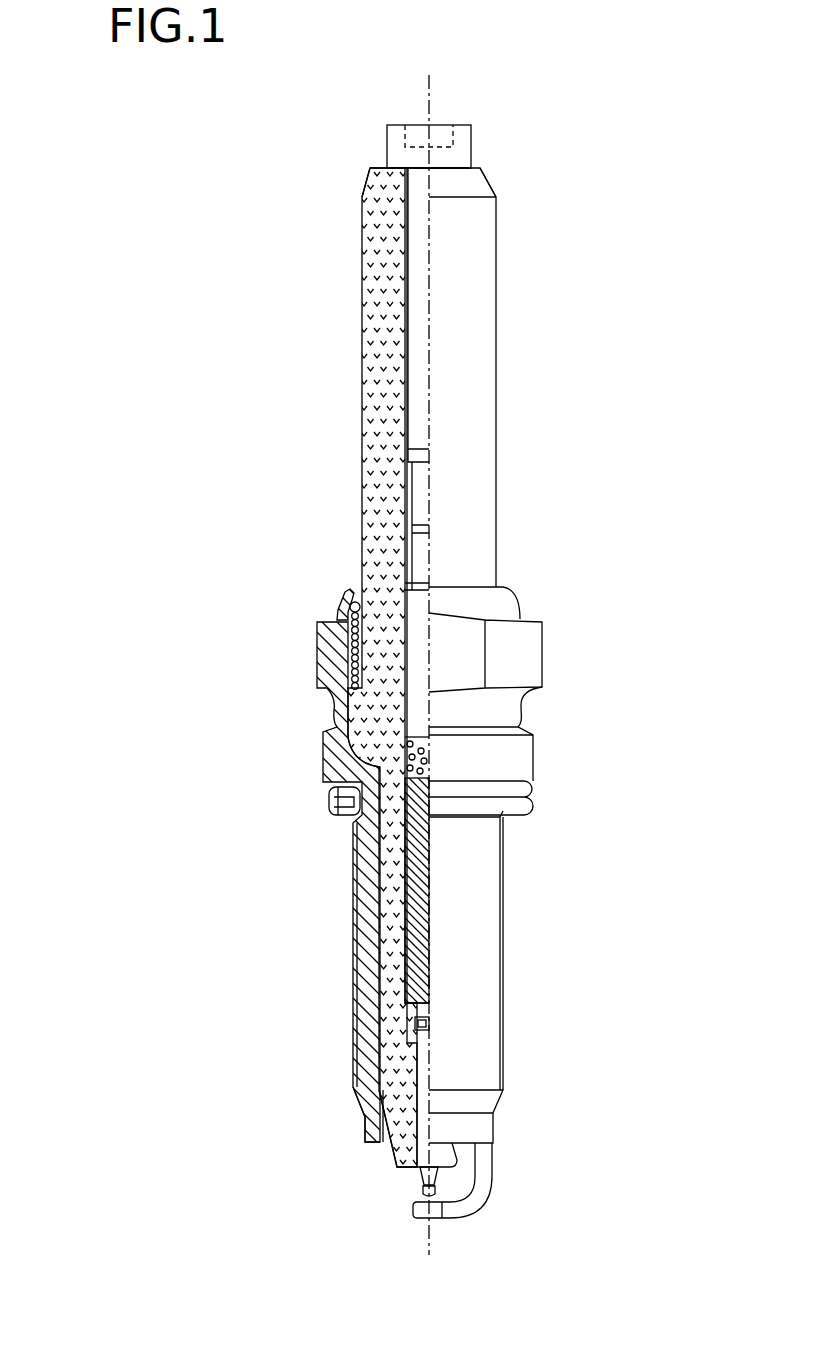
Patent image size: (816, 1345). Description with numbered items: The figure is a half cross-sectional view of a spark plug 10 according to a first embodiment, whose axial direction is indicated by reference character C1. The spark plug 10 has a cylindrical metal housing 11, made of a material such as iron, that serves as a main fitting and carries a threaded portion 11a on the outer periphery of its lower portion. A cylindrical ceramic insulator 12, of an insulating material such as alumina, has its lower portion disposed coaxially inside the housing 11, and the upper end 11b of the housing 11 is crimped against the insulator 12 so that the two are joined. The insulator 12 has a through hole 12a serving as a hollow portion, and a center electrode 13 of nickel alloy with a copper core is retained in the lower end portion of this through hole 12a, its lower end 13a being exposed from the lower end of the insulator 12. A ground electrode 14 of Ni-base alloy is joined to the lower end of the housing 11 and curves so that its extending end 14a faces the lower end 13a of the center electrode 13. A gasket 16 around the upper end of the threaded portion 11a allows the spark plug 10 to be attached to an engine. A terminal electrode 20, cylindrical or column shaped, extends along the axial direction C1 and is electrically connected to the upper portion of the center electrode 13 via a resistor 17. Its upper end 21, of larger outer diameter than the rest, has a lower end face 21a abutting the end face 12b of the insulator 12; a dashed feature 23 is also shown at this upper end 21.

The spark plug 10 is at (637, 141).
The housing 11 is at (315, 657).
The threaded portion 11a is at (355, 987).
The upper end of housing 11b is at (347, 590).
The insulator 12 is at (362, 300).
The through hole 12a is at (422, 1070).
The end face of insulator 12b is at (375, 167).
The center electrode 13 is at (422, 1115).
The lower end of center electrode 13a is at (420, 1191).
The ground electrode 14 is at (489, 1202).
The extending end of ground electrode 14a is at (437, 1212).
The gasket 16 is at (327, 810).
The resistor 17 is at (412, 933).
The terminal electrode 20 is at (418, 382).
The upper end of terminal electrode 21 is at (387, 138).
The lower end face of upper end 21a is at (395, 170).
The recess of terminal 23 is at (417, 123).
The axial direction C1 is at (429, 112).